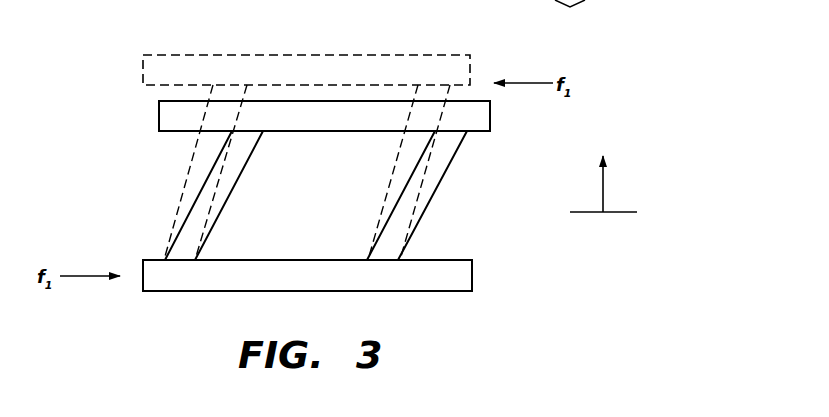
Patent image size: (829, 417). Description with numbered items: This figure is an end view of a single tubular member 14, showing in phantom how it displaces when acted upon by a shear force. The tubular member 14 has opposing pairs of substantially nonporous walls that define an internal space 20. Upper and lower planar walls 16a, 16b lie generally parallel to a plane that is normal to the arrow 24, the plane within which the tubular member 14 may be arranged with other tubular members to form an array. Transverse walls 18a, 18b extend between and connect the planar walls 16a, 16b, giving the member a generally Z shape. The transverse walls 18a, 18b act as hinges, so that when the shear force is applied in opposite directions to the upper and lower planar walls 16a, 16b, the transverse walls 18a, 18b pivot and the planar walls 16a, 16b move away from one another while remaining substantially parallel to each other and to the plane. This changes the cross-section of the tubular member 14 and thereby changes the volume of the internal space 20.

The tubular member 14 is at (427, 294).
The upper planar wall 16a is at (343, 101).
The lower planar wall 16b is at (190, 291).
The transverse wall 18a is at (193, 207).
The transverse wall 18b is at (437, 197).
The internal space 20 is at (325, 213).
The arrow 24 is at (604, 190).